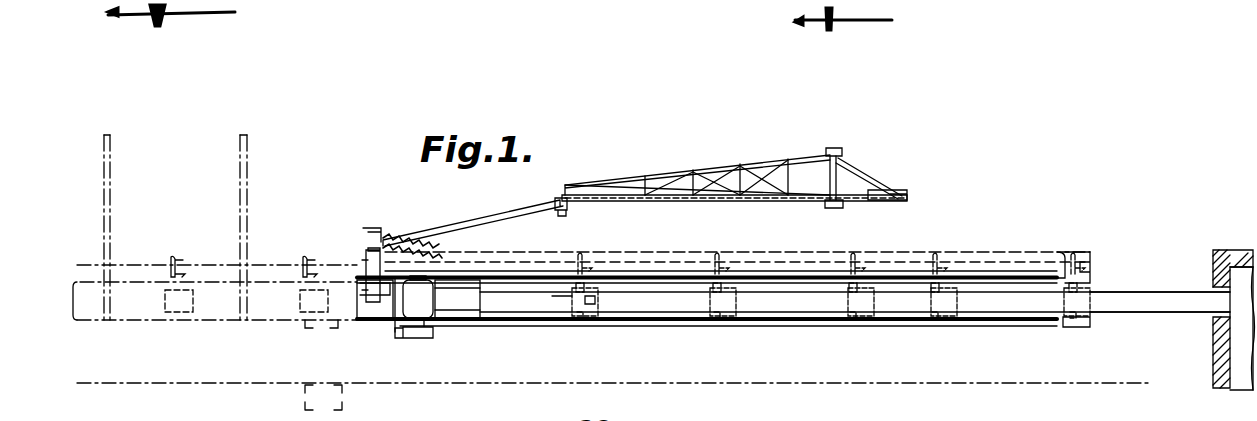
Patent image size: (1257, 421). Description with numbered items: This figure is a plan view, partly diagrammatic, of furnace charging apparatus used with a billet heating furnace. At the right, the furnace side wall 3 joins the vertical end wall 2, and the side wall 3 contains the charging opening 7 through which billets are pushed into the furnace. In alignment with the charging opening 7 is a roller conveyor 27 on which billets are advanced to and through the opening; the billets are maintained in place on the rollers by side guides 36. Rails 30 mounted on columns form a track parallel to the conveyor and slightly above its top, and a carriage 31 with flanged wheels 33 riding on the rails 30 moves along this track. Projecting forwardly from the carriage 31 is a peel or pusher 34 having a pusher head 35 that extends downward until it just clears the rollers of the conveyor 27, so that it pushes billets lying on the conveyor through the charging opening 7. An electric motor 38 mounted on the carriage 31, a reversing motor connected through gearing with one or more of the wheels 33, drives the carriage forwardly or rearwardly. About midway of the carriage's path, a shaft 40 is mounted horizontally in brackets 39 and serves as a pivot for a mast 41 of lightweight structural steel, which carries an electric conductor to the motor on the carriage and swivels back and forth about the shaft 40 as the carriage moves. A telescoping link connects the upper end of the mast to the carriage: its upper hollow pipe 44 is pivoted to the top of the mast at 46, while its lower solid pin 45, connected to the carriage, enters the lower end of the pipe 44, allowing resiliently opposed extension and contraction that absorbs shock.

The end wall 2 is at (1236, 250).
The side wall 3 is at (1212, 359).
The charging opening 7 is at (1219, 298).
The roller conveyor 27 is at (897, 326).
The rails 30 is at (690, 272).
The carriage 31 is at (459, 306).
The flanged wheels 33 is at (374, 321).
The peel or pusher 34 is at (550, 298).
The pusher head 35 is at (602, 301).
The side guides 36 is at (786, 265).
The electric motor 38 is at (420, 320).
The brackets 39 is at (844, 151).
The shaft 40 is at (854, 178).
The mast 41 is at (714, 173).
The pipe 44 is at (506, 218).
The pin 45 is at (400, 236).
The pivot 46 is at (568, 208).